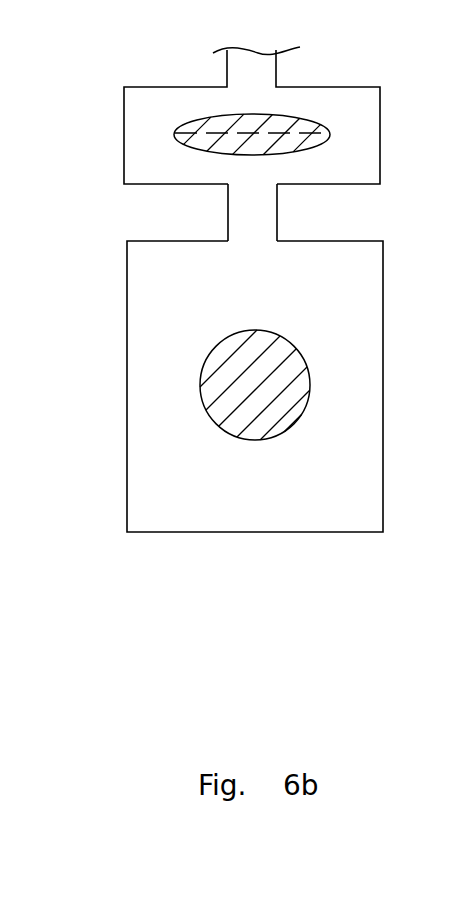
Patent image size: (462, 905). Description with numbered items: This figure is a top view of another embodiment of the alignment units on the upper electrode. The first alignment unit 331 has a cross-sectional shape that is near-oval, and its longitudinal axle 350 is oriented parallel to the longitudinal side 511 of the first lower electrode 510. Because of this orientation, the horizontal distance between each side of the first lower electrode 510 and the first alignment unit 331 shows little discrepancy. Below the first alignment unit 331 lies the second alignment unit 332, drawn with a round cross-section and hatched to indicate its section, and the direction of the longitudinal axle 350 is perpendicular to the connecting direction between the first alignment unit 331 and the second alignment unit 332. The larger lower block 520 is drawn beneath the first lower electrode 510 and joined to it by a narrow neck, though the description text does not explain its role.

The longitudinal axle 350 is at (208, 133).
The first alignment unit 331 is at (308, 127).
The first lower electrode 510 is at (140, 137).
The longitudinal side 511 is at (149, 186).
The lower block 520 is at (148, 391).
The second alignment unit 332 is at (297, 386).